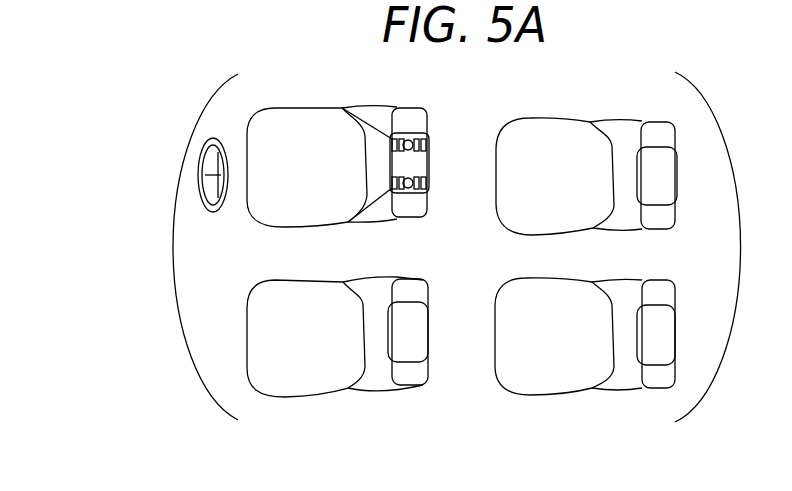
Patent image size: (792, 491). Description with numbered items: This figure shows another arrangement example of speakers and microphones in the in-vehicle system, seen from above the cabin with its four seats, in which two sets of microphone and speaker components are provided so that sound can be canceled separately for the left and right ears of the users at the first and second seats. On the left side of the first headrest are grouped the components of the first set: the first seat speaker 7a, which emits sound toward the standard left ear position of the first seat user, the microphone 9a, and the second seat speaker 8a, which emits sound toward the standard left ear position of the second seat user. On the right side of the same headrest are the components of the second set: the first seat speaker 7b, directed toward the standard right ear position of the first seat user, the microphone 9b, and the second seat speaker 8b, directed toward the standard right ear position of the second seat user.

The first seat speaker 7a is at (347, 224).
The first seat speaker 7b is at (347, 108).
The second seat speaker 8a is at (426, 185).
The second seat speaker 8b is at (426, 144).
The microphone 9a is at (424, 196).
The microphone 9b is at (421, 133).